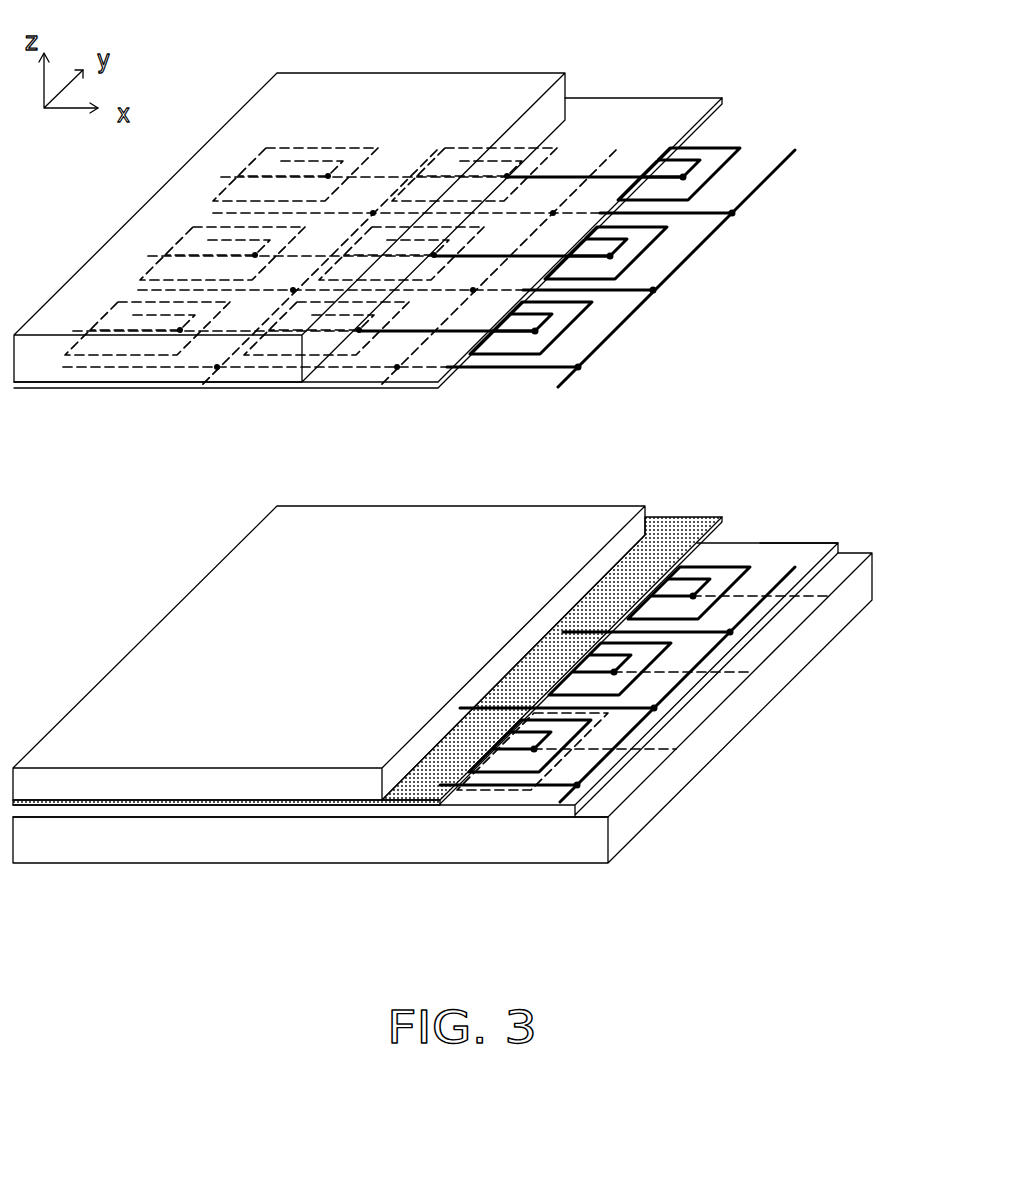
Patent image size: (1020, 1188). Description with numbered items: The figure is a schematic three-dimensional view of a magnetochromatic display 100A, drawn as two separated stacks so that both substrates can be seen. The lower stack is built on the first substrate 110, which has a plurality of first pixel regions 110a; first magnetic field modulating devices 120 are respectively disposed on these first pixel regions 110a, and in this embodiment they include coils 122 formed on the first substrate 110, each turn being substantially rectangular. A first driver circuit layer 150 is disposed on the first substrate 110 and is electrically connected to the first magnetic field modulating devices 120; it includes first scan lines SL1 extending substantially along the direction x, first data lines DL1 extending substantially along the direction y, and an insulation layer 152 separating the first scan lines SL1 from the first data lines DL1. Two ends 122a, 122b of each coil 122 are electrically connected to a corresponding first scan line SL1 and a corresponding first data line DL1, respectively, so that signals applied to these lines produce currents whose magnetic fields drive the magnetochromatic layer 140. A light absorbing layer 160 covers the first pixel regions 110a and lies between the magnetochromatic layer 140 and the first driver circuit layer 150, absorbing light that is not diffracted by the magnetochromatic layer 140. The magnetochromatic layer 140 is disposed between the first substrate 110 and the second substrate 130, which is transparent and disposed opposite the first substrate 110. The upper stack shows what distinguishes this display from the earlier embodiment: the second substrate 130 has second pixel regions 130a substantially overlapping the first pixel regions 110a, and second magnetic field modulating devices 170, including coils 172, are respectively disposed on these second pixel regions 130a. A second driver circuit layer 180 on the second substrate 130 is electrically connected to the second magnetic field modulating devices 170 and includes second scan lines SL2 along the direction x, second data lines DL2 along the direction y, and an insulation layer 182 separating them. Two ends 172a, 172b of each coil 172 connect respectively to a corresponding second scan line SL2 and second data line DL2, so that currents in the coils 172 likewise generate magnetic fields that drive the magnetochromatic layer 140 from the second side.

The magnetochromatic display 100A is at (461, 661).
The first substrate 110 is at (838, 672).
The first pixel regions 110a is at (497, 808).
The first magnetic field modulating devices 120 is at (689, 590).
The coil 122 is at (769, 530).
The end of coil 122a is at (708, 602).
The end of coil 122b is at (742, 641).
The second substrate 130 is at (368, 90).
The second pixel regions 130a is at (468, 128).
The magnetochromatic layer 140 is at (612, 505).
The first driver circuit layer 150 is at (456, 624).
The insulation layer 152 is at (814, 547).
The light absorbing layer 160 is at (660, 516).
The second magnetic field modulating devices 170 is at (422, 267).
The coil 172 is at (626, 322).
The end of coil 172a is at (505, 325).
The end of coil 172b is at (598, 368).
The second driver circuit layer 180 is at (392, 194).
The insulation layer 182 is at (643, 86).
The first data lines DL1 is at (778, 578).
The first scan lines SL1 is at (858, 588).
The second data lines DL2 is at (790, 158).
The second scan lines SL2 is at (624, 183).